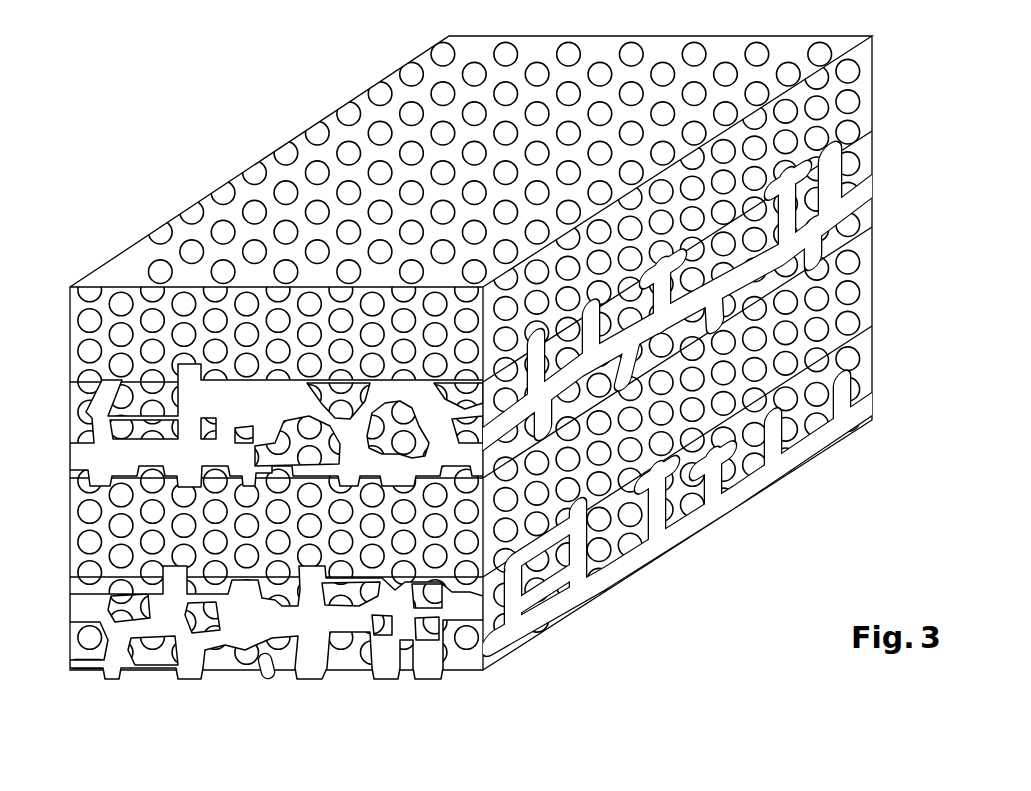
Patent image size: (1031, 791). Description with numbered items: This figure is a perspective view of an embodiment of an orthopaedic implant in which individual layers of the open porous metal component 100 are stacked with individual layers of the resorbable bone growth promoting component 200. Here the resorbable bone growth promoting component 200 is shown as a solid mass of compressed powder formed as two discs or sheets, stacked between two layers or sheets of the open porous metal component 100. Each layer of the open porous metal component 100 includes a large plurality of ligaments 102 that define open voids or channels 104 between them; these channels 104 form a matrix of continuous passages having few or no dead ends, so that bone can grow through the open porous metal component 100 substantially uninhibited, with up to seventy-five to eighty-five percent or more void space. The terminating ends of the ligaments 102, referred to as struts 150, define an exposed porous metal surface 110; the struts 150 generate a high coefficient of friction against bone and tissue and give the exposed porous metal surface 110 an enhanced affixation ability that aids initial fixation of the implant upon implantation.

The open porous metal component 100 is at (530, 453).
The resorbable bone growth promoting component 200 is at (890, 84).
The ligaments 102 is at (156, 645).
The channels 104 is at (97, 652).
The struts 150 is at (265, 672).
The exposed porous metal surface 110 is at (482, 682).